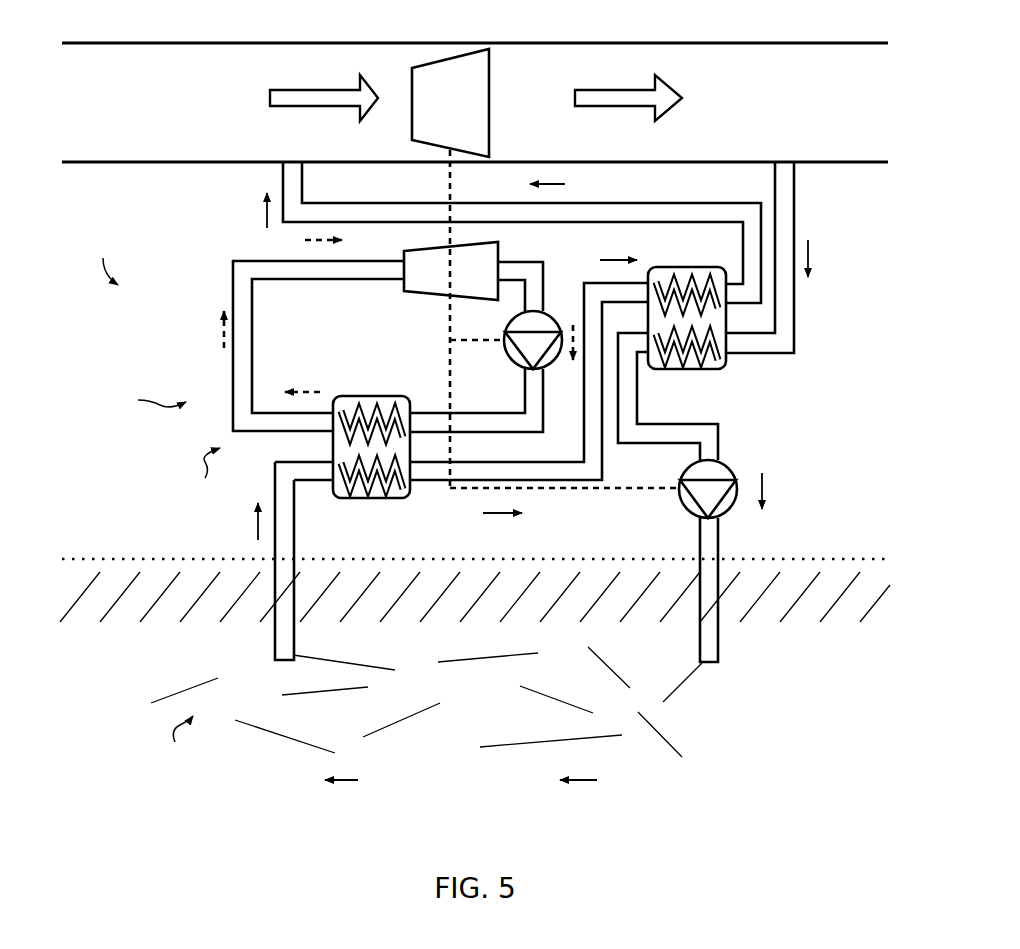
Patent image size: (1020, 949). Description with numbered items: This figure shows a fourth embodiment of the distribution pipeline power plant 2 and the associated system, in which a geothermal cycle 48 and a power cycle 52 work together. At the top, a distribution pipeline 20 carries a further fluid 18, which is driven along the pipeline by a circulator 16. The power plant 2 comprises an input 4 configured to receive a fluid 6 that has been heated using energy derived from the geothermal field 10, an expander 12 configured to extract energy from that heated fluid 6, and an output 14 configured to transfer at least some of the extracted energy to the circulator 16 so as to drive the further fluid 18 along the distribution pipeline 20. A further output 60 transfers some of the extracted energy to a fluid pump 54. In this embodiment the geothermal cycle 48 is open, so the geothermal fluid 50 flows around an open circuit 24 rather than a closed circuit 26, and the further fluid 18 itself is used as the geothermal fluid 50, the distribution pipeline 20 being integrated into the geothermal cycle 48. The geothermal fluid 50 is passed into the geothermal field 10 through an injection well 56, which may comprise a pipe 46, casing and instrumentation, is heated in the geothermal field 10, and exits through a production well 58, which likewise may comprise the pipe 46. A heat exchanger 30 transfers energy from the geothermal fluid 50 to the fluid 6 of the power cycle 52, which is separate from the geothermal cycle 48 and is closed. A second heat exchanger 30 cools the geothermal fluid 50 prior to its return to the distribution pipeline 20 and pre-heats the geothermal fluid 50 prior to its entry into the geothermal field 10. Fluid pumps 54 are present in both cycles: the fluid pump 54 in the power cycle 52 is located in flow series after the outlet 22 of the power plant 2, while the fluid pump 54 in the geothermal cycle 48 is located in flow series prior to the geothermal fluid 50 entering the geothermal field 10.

The distribution pipeline power plant 2 is at (106, 257).
The input 4 is at (360, 281).
The fluid 6 is at (232, 266).
The geothermal field 10 is at (430, 757).
The expander 12 is at (420, 294).
The output 14 is at (447, 228).
The circulator 16 is at (492, 100).
The further fluid 18 is at (268, 95).
The distribution pipeline 20 is at (640, 43).
The outlet 22 is at (500, 300).
The open circuit 24 is at (757, 407).
The closed circuit 26 is at (145, 403).
The heat exchanger 30 is at (688, 372).
The pipe 46 is at (515, 433).
The geothermal cycle 48 is at (173, 744).
The geothermal fluid 50 is at (682, 712).
The power cycle 52 is at (201, 476).
The fluid pump 54 is at (505, 358).
The injection well 56 is at (697, 555).
The production well 58 is at (297, 555).
The further output 60 is at (564, 319).